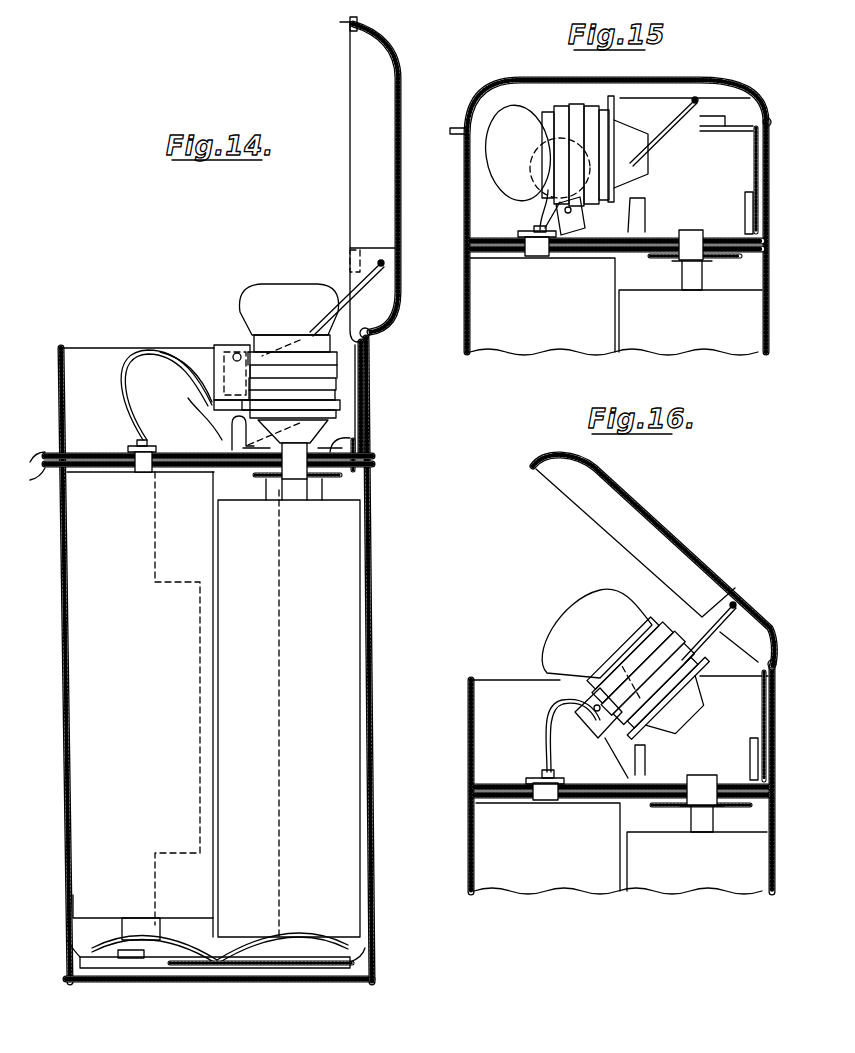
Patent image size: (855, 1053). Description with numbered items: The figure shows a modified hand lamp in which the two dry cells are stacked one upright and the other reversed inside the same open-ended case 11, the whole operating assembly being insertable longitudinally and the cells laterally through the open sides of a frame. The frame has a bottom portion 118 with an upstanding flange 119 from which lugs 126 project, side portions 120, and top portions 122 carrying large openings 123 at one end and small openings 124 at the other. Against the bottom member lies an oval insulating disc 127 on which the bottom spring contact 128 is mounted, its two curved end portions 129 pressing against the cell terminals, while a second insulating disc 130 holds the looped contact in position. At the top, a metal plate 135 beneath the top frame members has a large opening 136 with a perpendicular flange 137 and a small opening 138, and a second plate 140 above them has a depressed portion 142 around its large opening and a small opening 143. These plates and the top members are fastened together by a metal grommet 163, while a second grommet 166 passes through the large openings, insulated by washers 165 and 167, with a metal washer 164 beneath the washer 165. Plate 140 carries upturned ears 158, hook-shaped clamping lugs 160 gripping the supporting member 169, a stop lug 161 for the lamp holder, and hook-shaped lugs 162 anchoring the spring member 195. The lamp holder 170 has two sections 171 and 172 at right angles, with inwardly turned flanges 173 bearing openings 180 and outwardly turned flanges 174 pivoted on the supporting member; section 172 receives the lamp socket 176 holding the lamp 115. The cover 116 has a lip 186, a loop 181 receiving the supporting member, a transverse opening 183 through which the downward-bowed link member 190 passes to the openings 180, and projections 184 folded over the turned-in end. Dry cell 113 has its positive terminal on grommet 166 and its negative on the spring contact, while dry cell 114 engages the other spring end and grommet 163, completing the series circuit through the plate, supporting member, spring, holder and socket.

In FIG. 14, the case 11 is at (372, 556).
In FIG. 15, the case 11 is at (768, 300).
In FIG. 16, the case 11 is at (470, 750).
In FIG. 14, the dry cell 113 is at (342, 601).
In FIG. 14, the dry cell 114 is at (64, 595).
In FIG. 14, the lamp 115 is at (272, 290).
In FIG. 15, the lamp 115 is at (490, 168).
In FIG. 16, the lamp 115 is at (580, 618).
In FIG. 14, the cover 116 is at (395, 75).
In FIG. 15, the cover 116 is at (527, 79).
In FIG. 16, the cover 116 is at (716, 558).
In FIG. 14, the bottom portion 118 is at (318, 978).
In FIG. 14, the flange 119 is at (66, 940).
In FIG. 14, the side portions 120 is at (282, 647).
In FIG. 14, the top portions 122 is at (44, 456).
In FIG. 14, the large openings 123 is at (225, 451).
In FIG. 14, the small openings 124 is at (110, 472).
In FIG. 14, the lugs 126 is at (140, 970).
In FIG. 14, the oval-shaped disc 127 is at (112, 972).
In FIG. 14, the bottom spring contact 128 is at (226, 970).
In FIG. 14, the end portions 129 is at (160, 945).
In FIG. 14, the second oval-shaped disc 130 is at (366, 946).
In FIG. 14, the metal plate 135 is at (33, 479).
In FIG. 14, the large opening 136 is at (320, 500).
In FIG. 14, the flange 137 is at (266, 500).
In FIG. 14, the small opening 138 is at (138, 472).
In FIG. 14, the second plate 140 is at (92, 452).
In FIG. 14, the depressed portion 142 is at (346, 429).
In FIG. 14, the small opening 143 is at (152, 444).
In FIG. 14, the ears 158 is at (214, 416).
In FIG. 14, the lugs 160 is at (352, 442).
In FIG. 14, the lug 161 is at (362, 426).
In FIG. 15, the lug 161 is at (755, 199).
In FIG. 14, the hook-shaped lugs 162 is at (142, 440).
In FIG. 14, the metal grommet 163 is at (150, 474).
In FIG. 15, the metal grommet 163 is at (538, 260).
In FIG. 16, the metal grommet 163 is at (548, 803).
In FIG. 14, the metal washer 164 is at (289, 718).
In FIG. 14, the insulating washer 165 is at (342, 472).
In FIG. 14, the second metal grommet 166 is at (294, 481).
In FIG. 15, the second metal grommet 166 is at (696, 228).
In FIG. 16, the second metal grommet 166 is at (702, 808).
In FIG. 14, the insulating washer 167 is at (344, 409).
In FIG. 14, the supporting member 169 is at (366, 370).
In FIG. 15, the supporting member 169 is at (762, 158).
In FIG. 16, the supporting member 169 is at (766, 705).
In FIG. 14, the lamp holder 170 is at (218, 348).
In FIG. 15, the lamp holder 170 is at (594, 258).
In FIG. 16, the lamp holder 170 is at (596, 736).
In FIG. 14, the section 171 is at (197, 364).
In FIG. 14, the section 172 is at (342, 394).
In FIG. 14, the flanges 173 is at (228, 345).
In FIG. 14, the flanges 174 is at (230, 428).
In FIG. 14, the lamp socket 176 is at (358, 350).
In FIG. 15, the lamp socket 176 is at (598, 106).
In FIG. 16, the lamp socket 176 is at (668, 638).
In FIG. 14, the openings 180 is at (232, 370).
In FIG. 14, the loop 181 is at (372, 332).
In FIG. 14, the transverse opening 183 is at (386, 262).
In FIG. 14, the projections 184 is at (350, 255).
In FIG. 14, the lip 186 is at (340, 22).
In FIG. 15, the lip 186 is at (455, 138).
In FIG. 14, the link member 190 is at (328, 288).
In FIG. 15, the link member 190 is at (650, 128).
In FIG. 16, the link member 190 is at (702, 646).
In FIG. 14, the spring member 195 is at (128, 362).
In FIG. 15, the spring member 195 is at (520, 258).
In FIG. 16, the spring member 195 is at (540, 731).